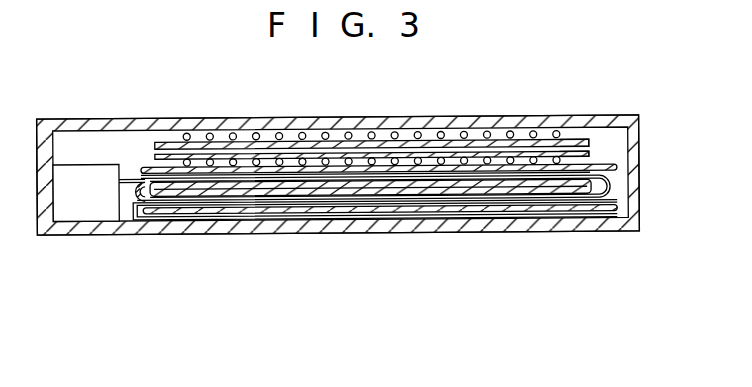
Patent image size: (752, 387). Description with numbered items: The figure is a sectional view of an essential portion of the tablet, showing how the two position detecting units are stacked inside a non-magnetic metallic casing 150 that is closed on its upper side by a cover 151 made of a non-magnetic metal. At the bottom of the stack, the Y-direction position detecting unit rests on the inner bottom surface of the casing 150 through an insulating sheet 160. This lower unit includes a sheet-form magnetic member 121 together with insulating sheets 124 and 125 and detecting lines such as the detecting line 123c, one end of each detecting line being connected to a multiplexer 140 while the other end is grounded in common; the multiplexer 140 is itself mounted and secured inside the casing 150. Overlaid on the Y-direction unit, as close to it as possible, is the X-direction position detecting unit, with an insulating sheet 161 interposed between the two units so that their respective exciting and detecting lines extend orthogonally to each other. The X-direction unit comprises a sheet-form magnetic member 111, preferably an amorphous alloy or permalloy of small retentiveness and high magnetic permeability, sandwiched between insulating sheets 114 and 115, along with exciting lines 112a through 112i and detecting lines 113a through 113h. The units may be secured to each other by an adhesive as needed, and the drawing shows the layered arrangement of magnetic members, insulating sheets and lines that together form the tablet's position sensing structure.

The magnetic member 111 is at (412, 142).
The exciting line 112a is at (193, 140).
The exciting line 112i is at (555, 140).
The detecting line 113a is at (212, 140).
The detecting line 113h is at (537, 138).
The insulating sheet 114 is at (163, 140).
The insulating sheet 115 is at (340, 143).
The magnetic member 121 is at (471, 203).
The detecting line 123c is at (610, 188).
The insulating sheet 124 is at (305, 190).
The insulating sheet 125 is at (238, 195).
The multiplexer 140 is at (73, 172).
The non-magnetic metallic casing 150 is at (568, 226).
The cover 151 is at (610, 118).
The insulating sheet 160 is at (372, 210).
The insulating sheet 161 is at (617, 167).